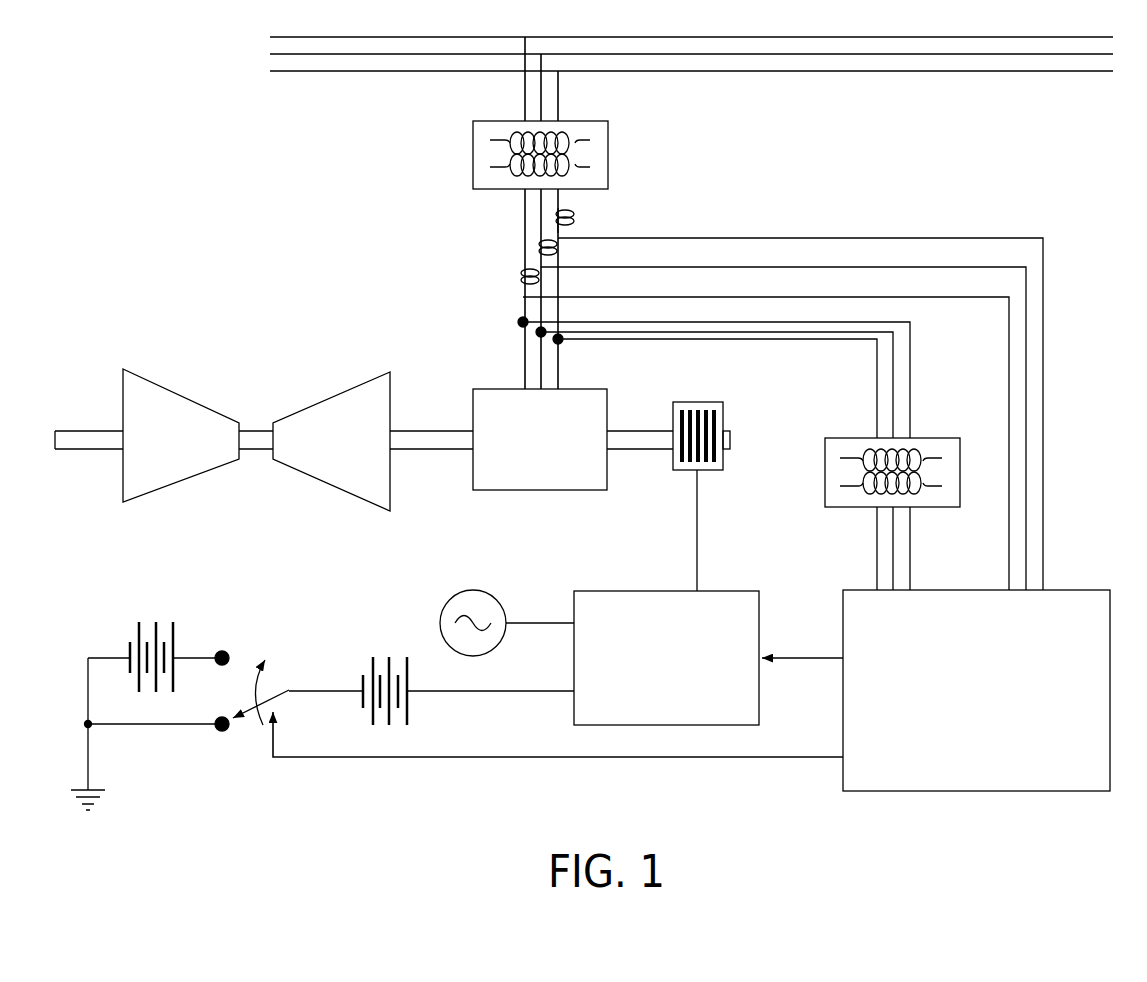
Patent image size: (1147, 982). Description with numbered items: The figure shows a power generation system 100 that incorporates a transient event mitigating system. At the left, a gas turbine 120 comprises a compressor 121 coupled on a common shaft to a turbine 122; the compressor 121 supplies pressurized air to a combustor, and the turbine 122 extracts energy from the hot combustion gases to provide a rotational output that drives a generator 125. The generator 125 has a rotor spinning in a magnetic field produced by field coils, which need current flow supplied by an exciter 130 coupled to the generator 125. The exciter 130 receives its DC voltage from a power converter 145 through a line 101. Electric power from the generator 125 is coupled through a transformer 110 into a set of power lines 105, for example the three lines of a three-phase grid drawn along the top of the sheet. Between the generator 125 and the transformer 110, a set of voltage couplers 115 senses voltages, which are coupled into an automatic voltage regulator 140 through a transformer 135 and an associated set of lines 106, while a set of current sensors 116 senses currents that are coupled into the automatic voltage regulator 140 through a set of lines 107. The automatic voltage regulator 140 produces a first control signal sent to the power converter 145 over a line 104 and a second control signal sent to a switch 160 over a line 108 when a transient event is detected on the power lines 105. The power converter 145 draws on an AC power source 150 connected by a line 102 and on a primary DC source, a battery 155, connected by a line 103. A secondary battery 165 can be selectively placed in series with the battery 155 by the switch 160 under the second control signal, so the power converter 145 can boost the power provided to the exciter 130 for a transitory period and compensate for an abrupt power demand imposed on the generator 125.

The power generation system 100 is at (144, 222).
The set of power lines 105 is at (308, 90).
The transformer 110 is at (463, 147).
The set of voltage couplers 115 is at (490, 245).
The set of current sensors 116 is at (510, 334).
The gas turbine 120 is at (264, 413).
The compressor 121 is at (147, 435).
The turbine 122 is at (305, 360).
The generator 125 is at (540, 439).
The exciter 130 is at (735, 425).
The transformer 135 is at (817, 472).
The automatic voltage regulator 140 is at (976, 690).
The power converter 145 is at (666, 658).
The AC power source 150 is at (485, 583).
The battery 155 is at (390, 648).
The switch 160 is at (253, 641).
The battery 165 is at (157, 612).
The line 101 is at (695, 540).
The line 102 is at (566, 620).
The line 103 is at (560, 694).
The line 104 is at (835, 655).
The set of lines 106 is at (855, 565).
The set of lines 107 is at (1055, 545).
The line 108 is at (680, 760).